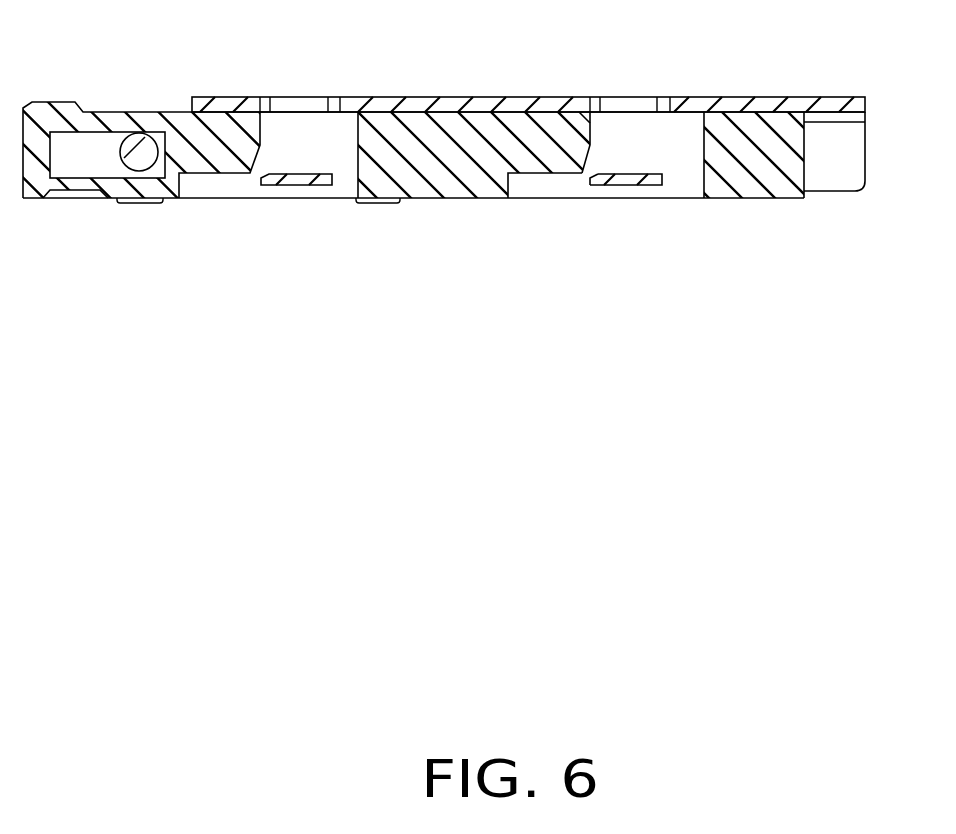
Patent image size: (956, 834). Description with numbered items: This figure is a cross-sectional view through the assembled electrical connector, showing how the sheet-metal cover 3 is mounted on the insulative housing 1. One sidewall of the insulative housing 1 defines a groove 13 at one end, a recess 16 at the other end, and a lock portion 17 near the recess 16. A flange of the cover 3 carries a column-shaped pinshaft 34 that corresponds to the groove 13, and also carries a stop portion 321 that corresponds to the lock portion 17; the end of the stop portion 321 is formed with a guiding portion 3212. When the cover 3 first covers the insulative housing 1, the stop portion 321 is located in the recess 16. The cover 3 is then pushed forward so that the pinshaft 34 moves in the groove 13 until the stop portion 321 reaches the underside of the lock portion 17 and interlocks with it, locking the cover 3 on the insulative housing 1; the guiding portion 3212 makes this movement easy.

The insulative housing 1 is at (760, 172).
The cover 3 is at (508, 108).
The groove 13 is at (82, 158).
The recess 16 is at (647, 138).
The lock portion 17 is at (546, 174).
The pinshaft 34 is at (145, 152).
The stop portion 321 is at (632, 180).
The guiding portion 3212 is at (600, 177).